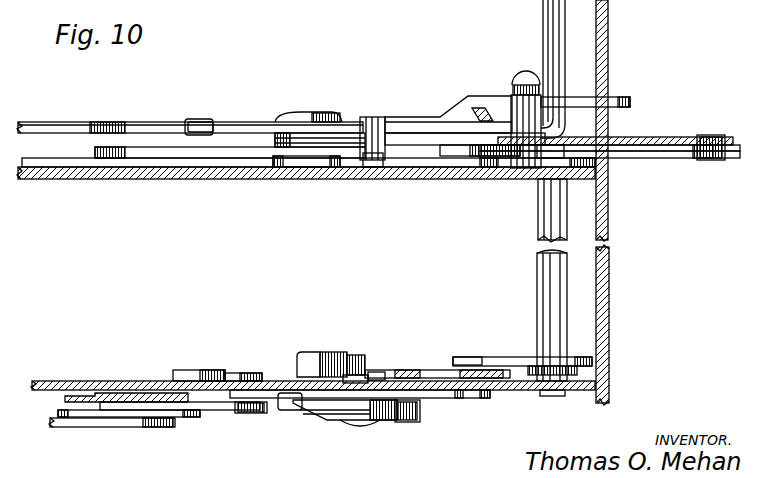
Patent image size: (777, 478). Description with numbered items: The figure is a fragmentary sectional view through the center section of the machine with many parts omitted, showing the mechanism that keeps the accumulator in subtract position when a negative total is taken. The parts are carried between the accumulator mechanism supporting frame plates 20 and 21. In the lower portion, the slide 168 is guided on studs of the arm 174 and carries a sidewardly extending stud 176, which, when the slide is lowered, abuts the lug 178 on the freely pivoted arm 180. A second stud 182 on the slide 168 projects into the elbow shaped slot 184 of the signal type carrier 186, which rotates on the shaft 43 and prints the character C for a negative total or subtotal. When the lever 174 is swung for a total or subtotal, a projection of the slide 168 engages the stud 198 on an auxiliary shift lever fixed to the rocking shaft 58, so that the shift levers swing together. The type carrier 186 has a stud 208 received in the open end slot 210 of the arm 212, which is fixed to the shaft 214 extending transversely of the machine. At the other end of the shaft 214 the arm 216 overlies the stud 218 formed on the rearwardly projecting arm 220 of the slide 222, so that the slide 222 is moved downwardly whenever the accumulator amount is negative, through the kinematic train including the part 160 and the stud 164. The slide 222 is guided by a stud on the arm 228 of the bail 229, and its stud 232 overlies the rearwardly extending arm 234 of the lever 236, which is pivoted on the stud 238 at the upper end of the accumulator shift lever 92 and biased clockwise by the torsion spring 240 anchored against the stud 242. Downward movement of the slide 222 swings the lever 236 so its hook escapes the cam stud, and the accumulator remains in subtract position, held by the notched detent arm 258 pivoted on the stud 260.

The frame plate 21 is at (70, 172).
The lever 236 is at (168, 120).
The detent arm 258 is at (195, 150).
The torsion spring 240 is at (290, 140).
The stud 238 is at (322, 115).
The stud 242 is at (383, 118).
The lever 92 is at (332, 160).
The arm 228 is at (413, 135).
The stud 232 is at (522, 70).
The arm 234 is at (617, 99).
The bail 229 is at (570, 53).
The slide 222 is at (617, 136).
The arm 220 is at (680, 141).
The arm 216 is at (677, 152).
The stud 218 is at (720, 161).
The stud 260 is at (465, 152).
The frame plate 20 is at (42, 380).
The arm 174 is at (100, 395).
The signal type carrier 186 is at (190, 372).
The freely pivoted arm 180 is at (260, 375).
The shaft 43 is at (313, 360).
The stud 182 is at (353, 363).
The elbow shaped slot 184 is at (372, 377).
The stud 208 is at (463, 358).
The open end slot 210 is at (470, 358).
The arm 212 is at (497, 358).
The shaft 214 is at (562, 303).
The slide 168 is at (197, 417).
The stud 164 is at (150, 414).
The part of kinematic train 160 is at (75, 427).
The stud 176 is at (255, 410).
The lug 178 is at (277, 413).
The shaft 58 is at (362, 428).
The stud 198 is at (427, 414).